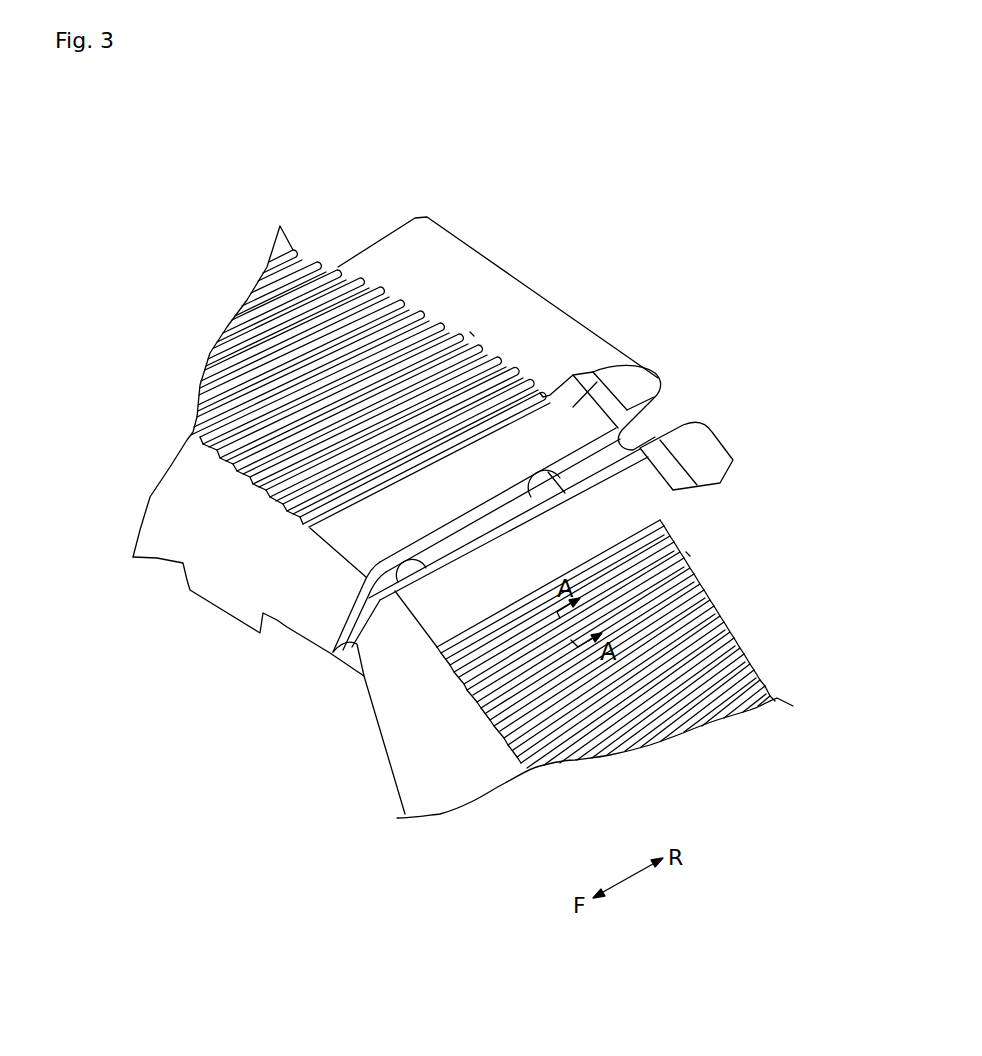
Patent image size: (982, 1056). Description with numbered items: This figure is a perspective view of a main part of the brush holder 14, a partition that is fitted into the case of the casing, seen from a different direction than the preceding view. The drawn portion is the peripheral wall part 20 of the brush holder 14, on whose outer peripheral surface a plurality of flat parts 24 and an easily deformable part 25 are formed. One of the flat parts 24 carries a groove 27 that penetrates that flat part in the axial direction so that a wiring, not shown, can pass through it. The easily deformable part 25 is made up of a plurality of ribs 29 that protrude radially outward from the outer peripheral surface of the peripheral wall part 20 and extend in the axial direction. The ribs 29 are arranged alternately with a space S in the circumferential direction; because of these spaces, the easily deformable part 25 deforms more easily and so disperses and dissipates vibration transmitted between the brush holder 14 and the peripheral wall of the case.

The brush holder 14 is at (165, 215).
The peripheral wall part 20 is at (417, 763).
The flat part 24 is at (633, 377).
The easily deformable part 25 is at (530, 478).
The groove 27 is at (353, 647).
The rib 29 is at (468, 334).
The space S is at (472, 333).